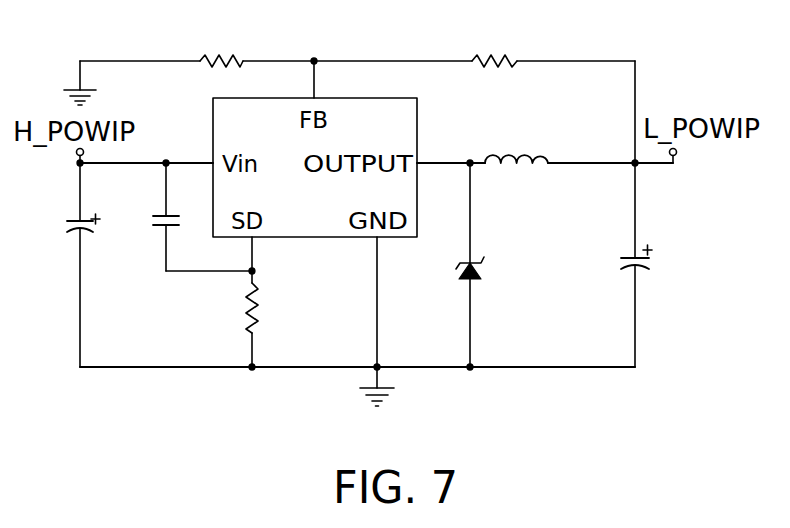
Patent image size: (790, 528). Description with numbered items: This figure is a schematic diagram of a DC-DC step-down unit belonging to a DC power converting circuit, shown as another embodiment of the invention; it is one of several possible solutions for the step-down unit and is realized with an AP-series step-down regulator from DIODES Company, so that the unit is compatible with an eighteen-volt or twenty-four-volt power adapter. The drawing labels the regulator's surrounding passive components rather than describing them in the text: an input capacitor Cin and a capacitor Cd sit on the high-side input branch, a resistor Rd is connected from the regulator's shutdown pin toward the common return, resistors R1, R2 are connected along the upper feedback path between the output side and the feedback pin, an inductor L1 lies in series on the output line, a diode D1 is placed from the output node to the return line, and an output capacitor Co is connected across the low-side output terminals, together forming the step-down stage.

The feedback resistor R1 is at (494, 49).
The feedback resistor R2 is at (221, 49).
The inductor L1 is at (516, 146).
The input capacitor Cin is at (61, 265).
The delay capacitor Cd is at (184, 217).
The delay resistor Rd is at (270, 308).
The Schottky diode D1 is at (488, 266).
The output capacitor Co is at (618, 257).